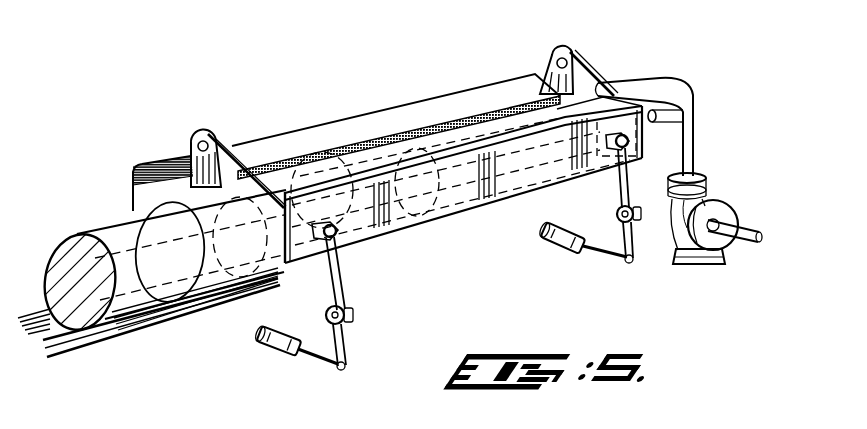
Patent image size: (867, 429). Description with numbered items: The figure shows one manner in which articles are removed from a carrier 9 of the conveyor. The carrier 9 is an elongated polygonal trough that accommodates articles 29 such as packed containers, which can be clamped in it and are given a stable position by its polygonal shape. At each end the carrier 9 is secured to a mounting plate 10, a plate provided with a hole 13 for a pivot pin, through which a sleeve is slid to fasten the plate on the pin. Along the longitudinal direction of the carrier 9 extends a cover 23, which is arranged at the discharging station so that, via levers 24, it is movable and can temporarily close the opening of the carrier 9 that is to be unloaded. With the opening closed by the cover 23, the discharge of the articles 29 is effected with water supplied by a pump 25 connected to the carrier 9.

The carrier 9 is at (465, 116).
The mounting plate 10 is at (191, 145).
The hole 13 is at (212, 135).
The cover 23 is at (467, 198).
The lever 24 is at (350, 290).
The pump 25 is at (679, 236).
The article 29 is at (112, 232).